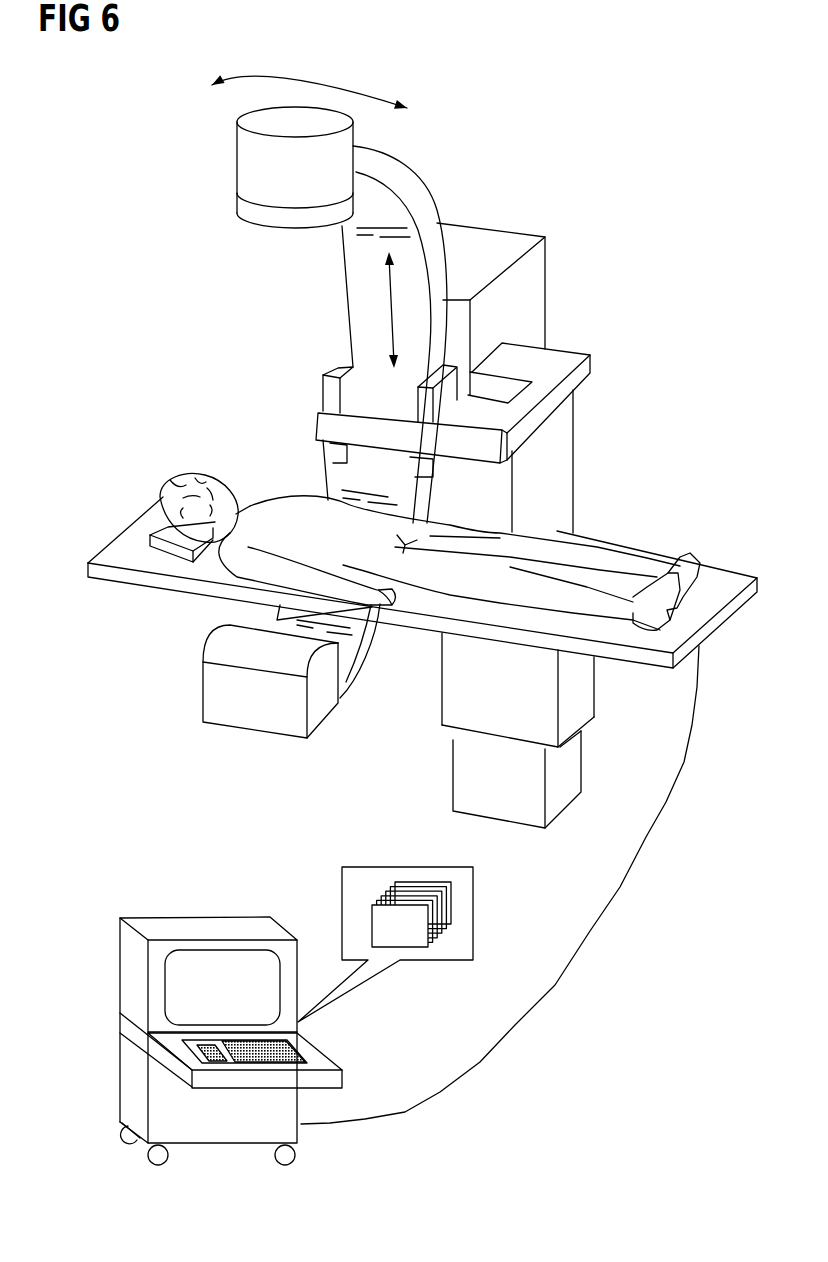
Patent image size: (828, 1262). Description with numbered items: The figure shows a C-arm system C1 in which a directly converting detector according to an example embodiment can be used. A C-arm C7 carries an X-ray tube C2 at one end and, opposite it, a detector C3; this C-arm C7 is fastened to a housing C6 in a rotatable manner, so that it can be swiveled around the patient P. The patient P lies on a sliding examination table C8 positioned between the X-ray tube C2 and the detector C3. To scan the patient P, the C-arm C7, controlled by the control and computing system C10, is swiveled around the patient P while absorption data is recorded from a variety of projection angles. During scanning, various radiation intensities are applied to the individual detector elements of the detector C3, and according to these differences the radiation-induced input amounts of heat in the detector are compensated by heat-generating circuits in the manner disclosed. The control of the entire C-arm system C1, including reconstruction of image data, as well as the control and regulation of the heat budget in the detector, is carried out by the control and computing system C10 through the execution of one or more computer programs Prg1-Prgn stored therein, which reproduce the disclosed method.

The C-arm system C1 is at (168, 380).
The X-ray tube C2 is at (237, 168).
The detector C3 is at (320, 708).
The housing C6 is at (545, 270).
The C-arm C7 is at (420, 185).
The examination table C8 is at (117, 582).
The control and computing system C10 is at (120, 966).
The patient P is at (282, 508).
The computer programs Prg1-Prgn is at (413, 948).